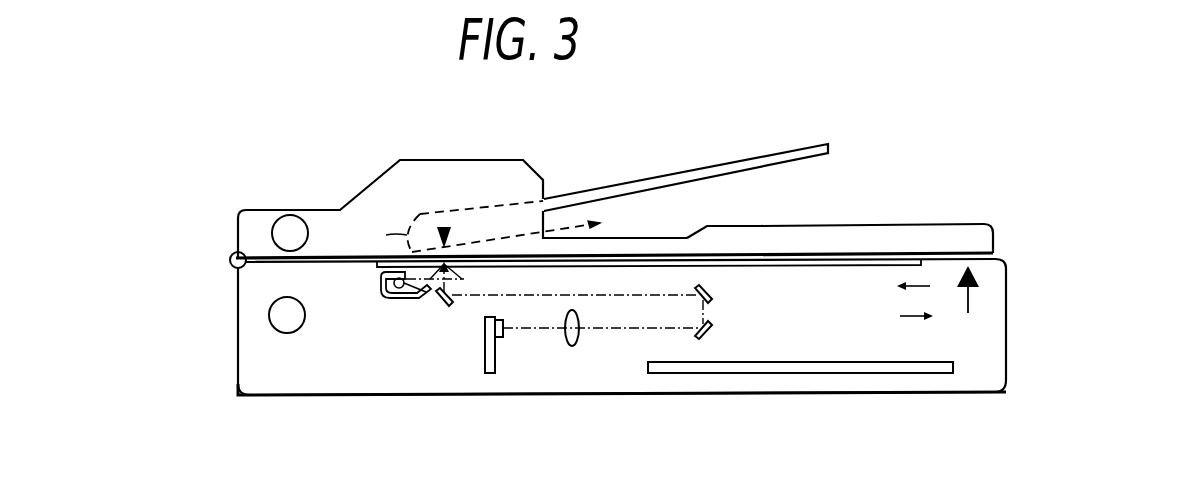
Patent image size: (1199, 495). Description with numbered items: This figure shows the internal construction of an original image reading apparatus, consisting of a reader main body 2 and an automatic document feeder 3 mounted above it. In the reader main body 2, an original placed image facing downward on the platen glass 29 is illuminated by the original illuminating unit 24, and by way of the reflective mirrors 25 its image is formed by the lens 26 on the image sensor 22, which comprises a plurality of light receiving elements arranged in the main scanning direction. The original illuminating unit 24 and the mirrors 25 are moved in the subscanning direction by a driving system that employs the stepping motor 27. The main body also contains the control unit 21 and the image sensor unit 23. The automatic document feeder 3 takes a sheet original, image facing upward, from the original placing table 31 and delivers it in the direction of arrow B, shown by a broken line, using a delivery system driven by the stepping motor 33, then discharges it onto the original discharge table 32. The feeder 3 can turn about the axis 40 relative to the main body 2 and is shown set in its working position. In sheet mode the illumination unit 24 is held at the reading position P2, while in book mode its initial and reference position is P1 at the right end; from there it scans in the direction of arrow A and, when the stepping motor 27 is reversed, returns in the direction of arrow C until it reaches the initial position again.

The reader main body 2 is at (997, 327).
The automatic document feeder 3 is at (948, 233).
The control unit 21 is at (758, 374).
The image sensor 22 is at (503, 331).
The image sensor unit 23 is at (487, 362).
The original illuminating unit 24 is at (414, 300).
The reflective mirrors 25 is at (713, 310).
The lens 26 is at (577, 339).
The stepping motor 27 is at (268, 320).
The platen glass 29 is at (822, 266).
The original placing table 31 is at (620, 190).
The original discharge table 32 is at (668, 237).
The stepping motor 33 is at (286, 215).
The axis 40 is at (229, 260).
The arrow B is at (460, 210).
The arrow A is at (904, 288).
The arrow C is at (905, 318).
The P1 position P1 is at (967, 308).
The P2 position P2 is at (383, 237).